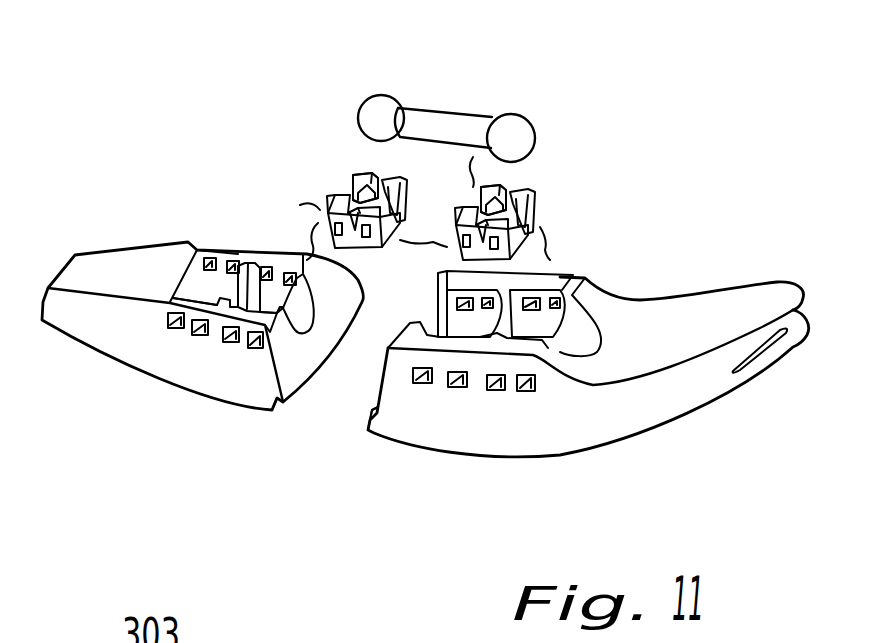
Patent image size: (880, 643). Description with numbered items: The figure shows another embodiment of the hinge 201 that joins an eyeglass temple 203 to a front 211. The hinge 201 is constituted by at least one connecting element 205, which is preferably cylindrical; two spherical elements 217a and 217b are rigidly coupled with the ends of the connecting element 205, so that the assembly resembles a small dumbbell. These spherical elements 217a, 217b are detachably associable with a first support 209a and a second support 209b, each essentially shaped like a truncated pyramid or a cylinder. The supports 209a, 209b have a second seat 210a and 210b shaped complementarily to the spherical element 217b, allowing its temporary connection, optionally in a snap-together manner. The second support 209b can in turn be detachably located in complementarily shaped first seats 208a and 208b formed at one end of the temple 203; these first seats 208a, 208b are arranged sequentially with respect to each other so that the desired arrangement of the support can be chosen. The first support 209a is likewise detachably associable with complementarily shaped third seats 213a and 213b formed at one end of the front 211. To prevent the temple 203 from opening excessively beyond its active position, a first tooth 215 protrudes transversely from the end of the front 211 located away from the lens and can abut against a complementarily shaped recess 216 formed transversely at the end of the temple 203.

The hinge 201 is at (672, 68).
The temple 203 is at (85, 285).
The connecting element 205 is at (485, 81).
The first seat 208a is at (190, 268).
The first seat 208b is at (260, 262).
The first support 209a is at (556, 204).
The second support 209b is at (352, 150).
The second seat 210a is at (537, 170).
The second seat 210b is at (333, 174).
The front 211 is at (596, 456).
The third seat 213a is at (430, 318).
The third seat 213b is at (566, 287).
The first tooth 215 is at (373, 430).
The recess 216 is at (277, 415).
The spherical element 217a is at (513, 114).
The spherical element 217b is at (388, 93).